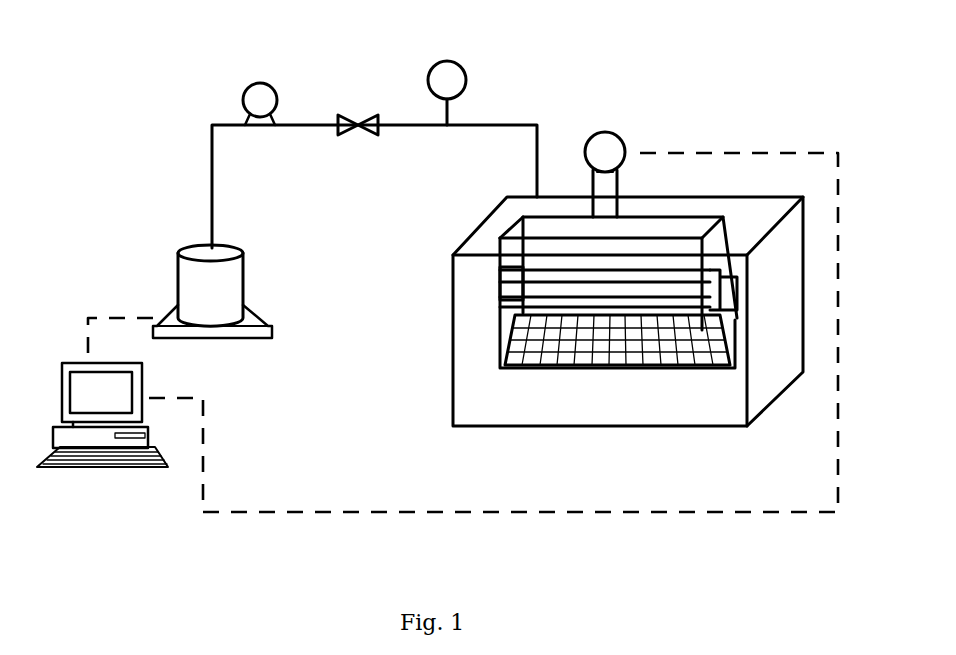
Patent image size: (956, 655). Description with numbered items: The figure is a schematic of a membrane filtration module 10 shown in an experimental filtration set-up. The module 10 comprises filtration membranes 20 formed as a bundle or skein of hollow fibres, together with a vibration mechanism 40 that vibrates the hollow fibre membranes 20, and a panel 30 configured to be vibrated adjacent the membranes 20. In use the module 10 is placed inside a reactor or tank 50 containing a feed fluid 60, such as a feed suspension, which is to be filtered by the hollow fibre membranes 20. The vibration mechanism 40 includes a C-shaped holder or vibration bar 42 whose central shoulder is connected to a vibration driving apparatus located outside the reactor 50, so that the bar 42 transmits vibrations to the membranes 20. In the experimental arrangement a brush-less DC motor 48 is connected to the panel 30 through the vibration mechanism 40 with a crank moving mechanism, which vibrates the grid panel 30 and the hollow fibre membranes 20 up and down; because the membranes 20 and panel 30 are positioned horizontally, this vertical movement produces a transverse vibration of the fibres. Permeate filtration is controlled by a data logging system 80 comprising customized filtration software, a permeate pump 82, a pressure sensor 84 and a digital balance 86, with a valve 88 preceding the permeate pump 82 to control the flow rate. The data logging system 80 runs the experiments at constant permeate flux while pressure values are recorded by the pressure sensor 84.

The membrane filtration module 10 is at (456, 218).
The filtration membranes 20 is at (530, 290).
The panel 30 is at (645, 355).
The vibration mechanism 40 is at (620, 139).
The vibration bar 42 is at (675, 228).
The brush-less DC motor 48 is at (618, 140).
The reactor or tank 50 is at (591, 344).
The feed fluid 60 is at (475, 390).
The data logging system 80 is at (102, 488).
The permeate pump 82 is at (260, 95).
The pressure sensor 84 is at (445, 63).
The digital balance 86 is at (233, 275).
The valve 88 is at (345, 115).